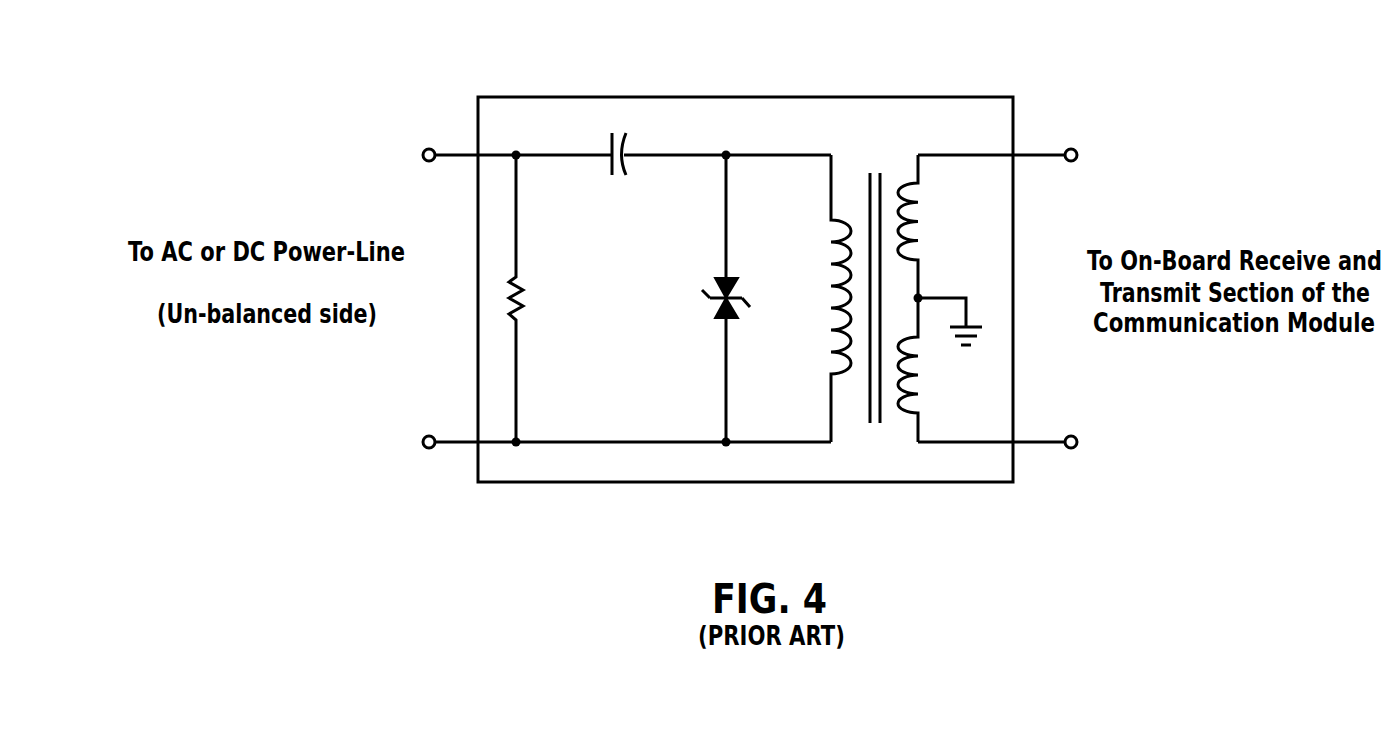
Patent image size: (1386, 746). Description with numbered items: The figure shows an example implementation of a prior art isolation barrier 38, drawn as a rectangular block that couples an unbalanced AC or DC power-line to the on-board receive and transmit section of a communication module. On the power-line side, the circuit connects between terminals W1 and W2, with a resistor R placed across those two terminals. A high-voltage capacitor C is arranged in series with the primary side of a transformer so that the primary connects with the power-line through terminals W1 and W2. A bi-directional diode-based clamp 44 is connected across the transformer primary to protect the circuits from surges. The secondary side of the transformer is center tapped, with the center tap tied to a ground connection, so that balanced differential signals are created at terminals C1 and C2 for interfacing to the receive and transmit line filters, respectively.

The isolation barrier 38 is at (906, 97).
The bi-directional diode-based clamp 44 is at (715, 277).
The resistor R is at (528, 298).
The high-voltage capacitor C is at (610, 140).
The terminal W1 is at (463, 132).
The terminal W2 is at (463, 419).
The terminal C1 is at (999, 132).
The terminal C2 is at (999, 419).